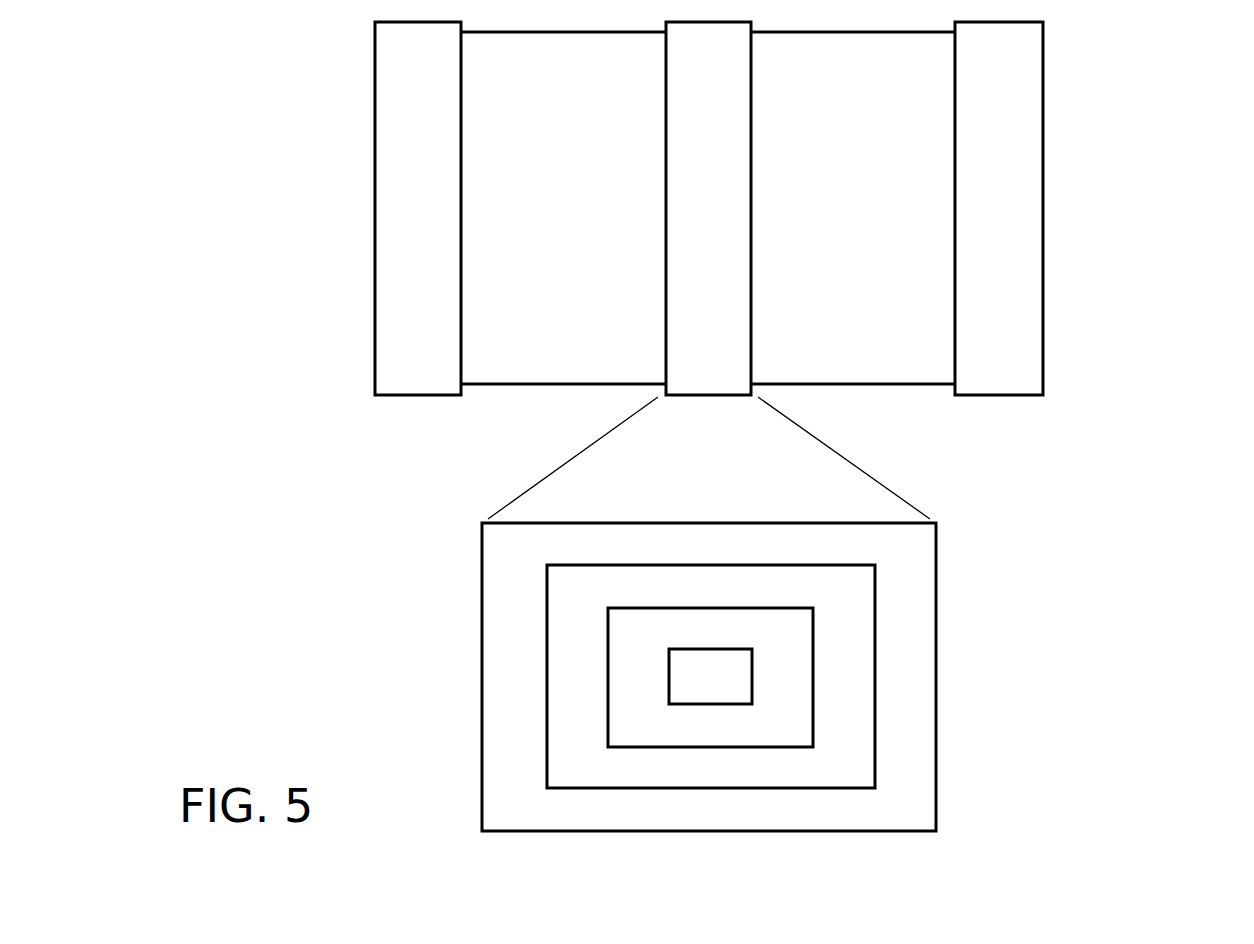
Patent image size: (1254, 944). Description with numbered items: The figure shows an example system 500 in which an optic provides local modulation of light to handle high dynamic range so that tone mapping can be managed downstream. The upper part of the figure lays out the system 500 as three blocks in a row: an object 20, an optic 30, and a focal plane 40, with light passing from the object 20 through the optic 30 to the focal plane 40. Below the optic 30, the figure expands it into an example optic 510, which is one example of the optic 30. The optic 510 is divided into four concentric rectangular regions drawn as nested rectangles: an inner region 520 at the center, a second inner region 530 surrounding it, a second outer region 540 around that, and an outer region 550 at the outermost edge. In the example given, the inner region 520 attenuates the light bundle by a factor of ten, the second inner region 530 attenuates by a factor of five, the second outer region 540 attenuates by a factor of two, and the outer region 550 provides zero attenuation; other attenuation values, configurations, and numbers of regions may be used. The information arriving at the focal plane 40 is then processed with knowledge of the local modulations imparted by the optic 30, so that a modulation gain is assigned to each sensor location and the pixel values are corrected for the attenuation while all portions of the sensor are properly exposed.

The object 20 is at (403, 373).
The optic 30 is at (693, 373).
The focal plane 40 is at (984, 373).
The system 500 is at (1253, 108).
The optic 510 is at (936, 523).
The inner region 520 is at (708, 678).
The second inner region 530 is at (777, 710).
The second outer region 540 is at (842, 737).
The outer region 550 is at (902, 662).